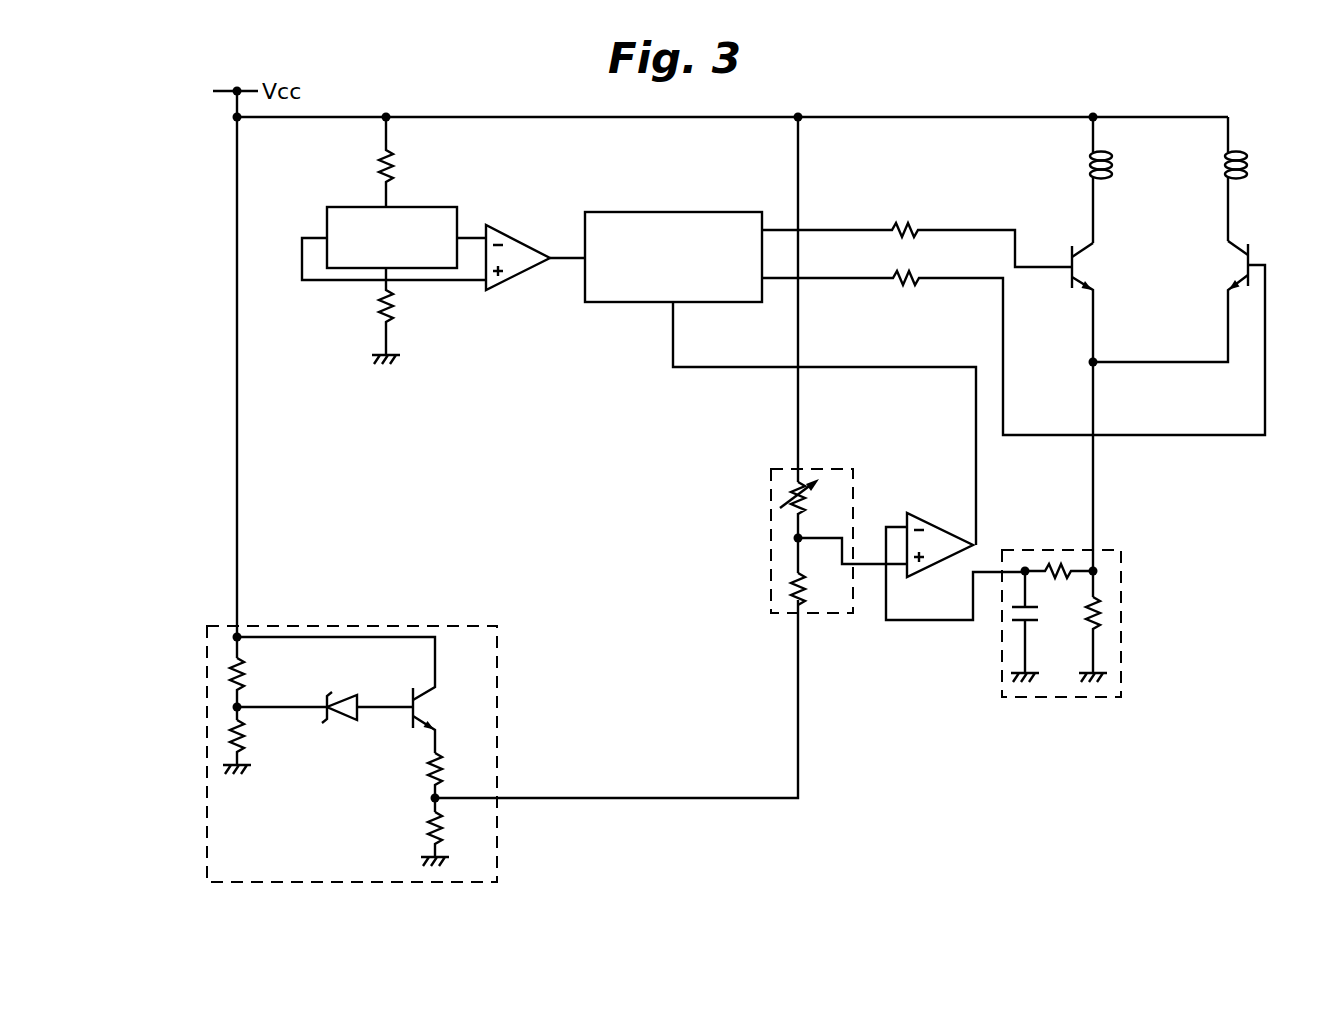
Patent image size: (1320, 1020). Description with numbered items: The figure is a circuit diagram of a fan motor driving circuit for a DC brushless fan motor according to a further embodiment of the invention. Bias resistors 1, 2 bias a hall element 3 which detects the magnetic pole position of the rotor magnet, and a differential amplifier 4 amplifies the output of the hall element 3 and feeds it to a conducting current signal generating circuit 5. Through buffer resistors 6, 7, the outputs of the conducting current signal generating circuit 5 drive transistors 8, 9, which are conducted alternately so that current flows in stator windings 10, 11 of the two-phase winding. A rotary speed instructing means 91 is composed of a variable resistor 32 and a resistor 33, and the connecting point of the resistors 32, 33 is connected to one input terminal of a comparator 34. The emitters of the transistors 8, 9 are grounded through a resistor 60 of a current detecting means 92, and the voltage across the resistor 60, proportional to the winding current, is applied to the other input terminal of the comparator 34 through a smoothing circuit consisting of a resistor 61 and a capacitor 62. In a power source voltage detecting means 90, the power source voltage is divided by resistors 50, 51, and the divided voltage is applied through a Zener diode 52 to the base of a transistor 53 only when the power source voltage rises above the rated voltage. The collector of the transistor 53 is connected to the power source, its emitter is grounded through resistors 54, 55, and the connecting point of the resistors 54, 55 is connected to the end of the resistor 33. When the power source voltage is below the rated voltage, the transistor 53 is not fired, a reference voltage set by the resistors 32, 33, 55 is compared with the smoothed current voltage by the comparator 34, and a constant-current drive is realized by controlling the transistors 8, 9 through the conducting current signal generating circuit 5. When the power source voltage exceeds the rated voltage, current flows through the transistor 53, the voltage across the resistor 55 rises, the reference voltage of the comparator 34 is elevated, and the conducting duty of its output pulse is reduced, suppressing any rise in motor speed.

The bias resistor 1 is at (384, 155).
The bias resistor 2 is at (383, 316).
The hall element 3 is at (418, 207).
The differential amplifier 4 is at (498, 224).
The conducting current signal generating circuit 5 is at (601, 212).
The buffer resistor 6 is at (904, 225).
The buffer resistor 7 is at (906, 275).
The transistor 8 is at (1097, 286).
The transistor 9 is at (1238, 286).
The stator winding 10 is at (1112, 161).
The stator winding 11 is at (1247, 168).
The variable resistor 32 is at (796, 486).
The resistor 33 is at (795, 575).
The comparator 34 is at (905, 512).
The resistor 50 is at (234, 671).
The resistor 51 is at (234, 729).
The Zener diode 52 is at (347, 695).
The transistor 53 is at (436, 690).
The resistor 54 is at (430, 766).
The resistor 55 is at (430, 821).
The resistor 60 is at (1103, 598).
The resistor 61 is at (1062, 566).
The capacitor 62 is at (1013, 615).
The power source voltage detecting means 90 is at (368, 754).
The rotary speed instructing means 91 is at (804, 541).
The current detecting means 92 is at (1062, 619).